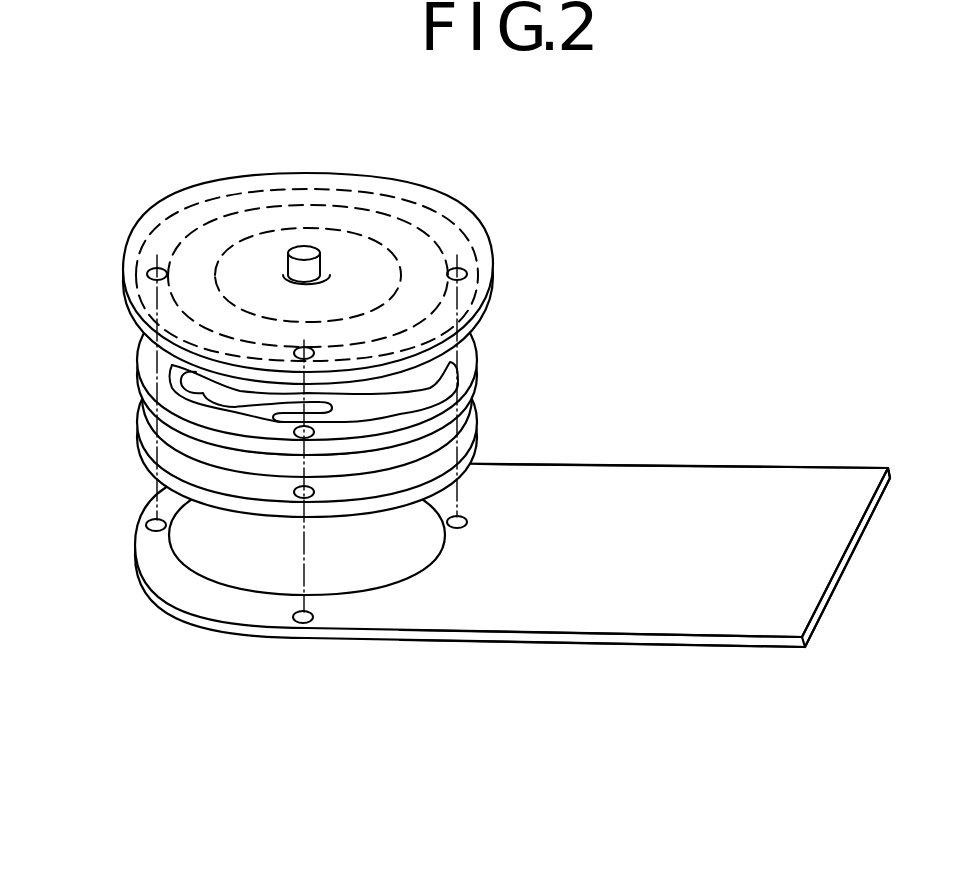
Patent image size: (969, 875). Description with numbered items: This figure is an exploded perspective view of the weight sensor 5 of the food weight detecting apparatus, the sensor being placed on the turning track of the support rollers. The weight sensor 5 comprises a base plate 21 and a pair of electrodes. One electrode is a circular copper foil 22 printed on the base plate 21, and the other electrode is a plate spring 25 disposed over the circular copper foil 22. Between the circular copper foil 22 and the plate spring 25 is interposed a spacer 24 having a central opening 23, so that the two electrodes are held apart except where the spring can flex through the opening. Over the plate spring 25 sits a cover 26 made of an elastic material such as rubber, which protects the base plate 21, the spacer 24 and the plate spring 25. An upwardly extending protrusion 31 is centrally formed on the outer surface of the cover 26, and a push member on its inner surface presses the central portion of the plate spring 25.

The weight sensor 5 is at (495, 256).
The base plate 21 is at (745, 478).
The circular copper foil 22 is at (249, 577).
The central opening 23 is at (213, 452).
The spacer 24 is at (140, 466).
The plate spring 25 is at (145, 379).
The cover 26 is at (133, 296).
The protrusion 31 is at (322, 266).